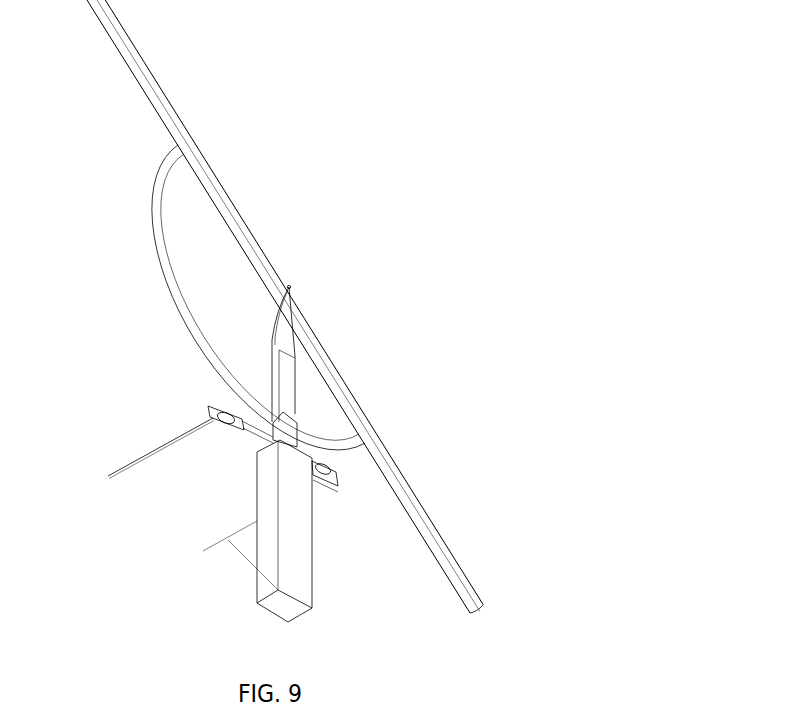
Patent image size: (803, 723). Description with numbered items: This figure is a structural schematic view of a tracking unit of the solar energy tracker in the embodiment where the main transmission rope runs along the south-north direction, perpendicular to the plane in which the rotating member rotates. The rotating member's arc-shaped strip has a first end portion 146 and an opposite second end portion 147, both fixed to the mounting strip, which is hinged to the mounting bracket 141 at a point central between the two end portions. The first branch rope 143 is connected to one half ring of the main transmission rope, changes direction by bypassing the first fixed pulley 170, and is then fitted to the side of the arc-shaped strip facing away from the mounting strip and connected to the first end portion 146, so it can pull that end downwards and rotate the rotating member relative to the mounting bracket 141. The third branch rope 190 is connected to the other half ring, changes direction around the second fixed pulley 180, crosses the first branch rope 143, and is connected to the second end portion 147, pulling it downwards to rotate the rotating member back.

The mounting bracket 141 is at (354, 280).
The first branch rope 143 is at (153, 448).
The first end portion 146 is at (438, 398).
The second end portion 147 is at (244, 100).
The first fixed pulley 170 is at (218, 412).
The second fixed pulley 180 is at (371, 572).
The third branch rope 190 is at (362, 618).